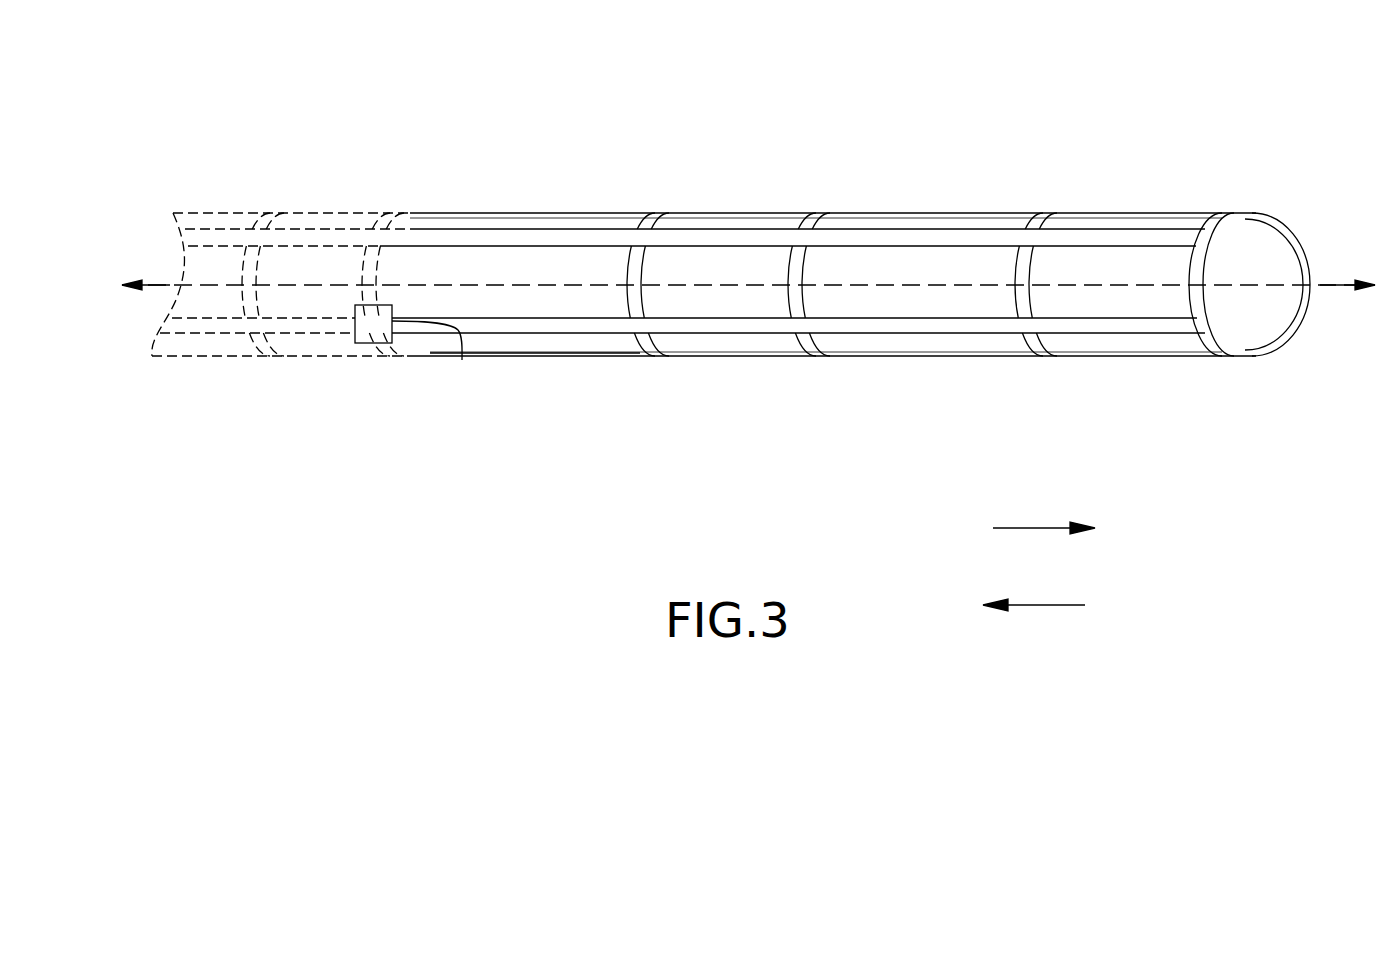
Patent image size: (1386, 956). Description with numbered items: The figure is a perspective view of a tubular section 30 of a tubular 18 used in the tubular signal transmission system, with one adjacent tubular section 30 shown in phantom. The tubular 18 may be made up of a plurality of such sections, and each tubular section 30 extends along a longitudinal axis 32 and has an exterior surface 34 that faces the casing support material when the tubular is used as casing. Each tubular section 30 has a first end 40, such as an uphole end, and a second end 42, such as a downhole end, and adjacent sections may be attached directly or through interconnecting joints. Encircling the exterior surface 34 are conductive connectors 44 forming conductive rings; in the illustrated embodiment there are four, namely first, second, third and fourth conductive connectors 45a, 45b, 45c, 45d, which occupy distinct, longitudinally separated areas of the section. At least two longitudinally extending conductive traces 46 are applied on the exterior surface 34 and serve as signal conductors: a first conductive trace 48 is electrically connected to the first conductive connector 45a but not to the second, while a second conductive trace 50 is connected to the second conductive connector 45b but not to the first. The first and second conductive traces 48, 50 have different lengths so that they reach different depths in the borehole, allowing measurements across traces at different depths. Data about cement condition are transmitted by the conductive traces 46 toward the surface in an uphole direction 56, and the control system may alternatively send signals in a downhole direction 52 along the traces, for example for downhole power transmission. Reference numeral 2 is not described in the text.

The lead wire 2 is at (462, 360).
The tubular 18 is at (1177, 362).
The tubular section 30 is at (320, 355).
The longitudinal axis 32 is at (188, 282).
The exterior surface 34 is at (543, 343).
The first end 40 is at (392, 343).
The second end 42 is at (362, 350).
The conductive connector 44 is at (268, 217).
The first conductive connector 45a is at (1217, 356).
The second conductive connector 45b is at (1047, 353).
The third conductive connector 45c is at (822, 355).
The fourth conductive connector 45d is at (658, 353).
The conductive trace 46 is at (213, 235).
The first conductive trace 48 is at (948, 238).
The second conductive trace 50 is at (932, 323).
The downhole direction 52 is at (1044, 513).
The uphole direction 56 is at (1034, 589).